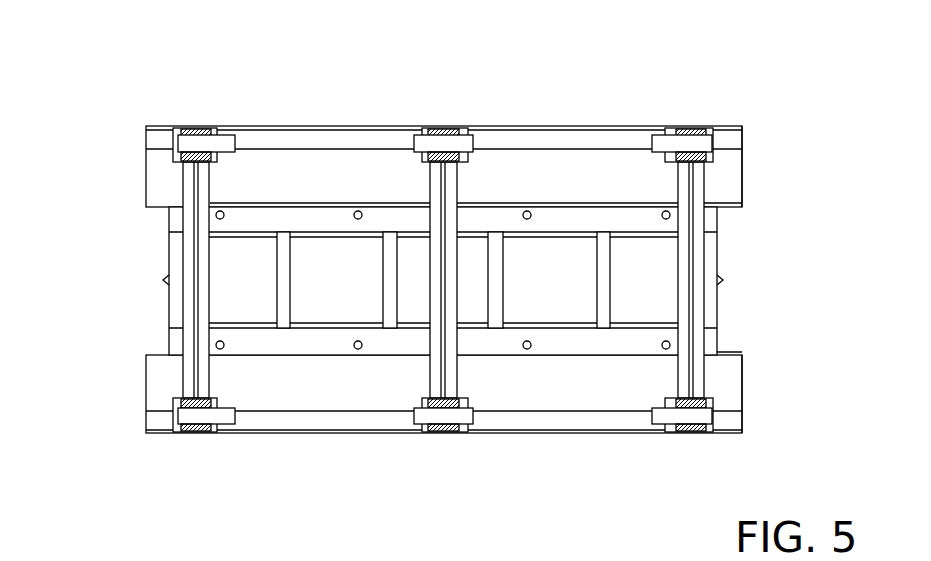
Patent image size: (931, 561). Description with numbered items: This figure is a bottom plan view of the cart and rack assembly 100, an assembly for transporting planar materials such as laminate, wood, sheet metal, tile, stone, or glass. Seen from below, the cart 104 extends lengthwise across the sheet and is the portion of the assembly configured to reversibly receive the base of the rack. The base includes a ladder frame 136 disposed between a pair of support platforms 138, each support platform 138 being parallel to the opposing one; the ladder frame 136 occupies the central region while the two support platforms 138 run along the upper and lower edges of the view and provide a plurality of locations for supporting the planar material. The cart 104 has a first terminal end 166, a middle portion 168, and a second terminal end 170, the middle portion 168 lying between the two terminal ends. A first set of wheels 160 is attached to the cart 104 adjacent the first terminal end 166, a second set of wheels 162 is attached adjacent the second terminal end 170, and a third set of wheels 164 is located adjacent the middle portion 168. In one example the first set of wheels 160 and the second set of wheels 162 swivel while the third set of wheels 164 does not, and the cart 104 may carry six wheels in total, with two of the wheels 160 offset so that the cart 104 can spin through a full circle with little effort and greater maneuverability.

The cart and rack assembly 100 is at (446, 265).
The cart 104 is at (146, 395).
The ladder frame 136 is at (613, 278).
The support platform 138 is at (742, 190).
The first set of wheels 160 is at (228, 127).
The second set of wheels 162 is at (668, 128).
The third set of wheels 164 is at (462, 128).
The first terminal end 166 is at (146, 165).
The middle portion 168 is at (412, 125).
The second terminal end 170 is at (744, 154).